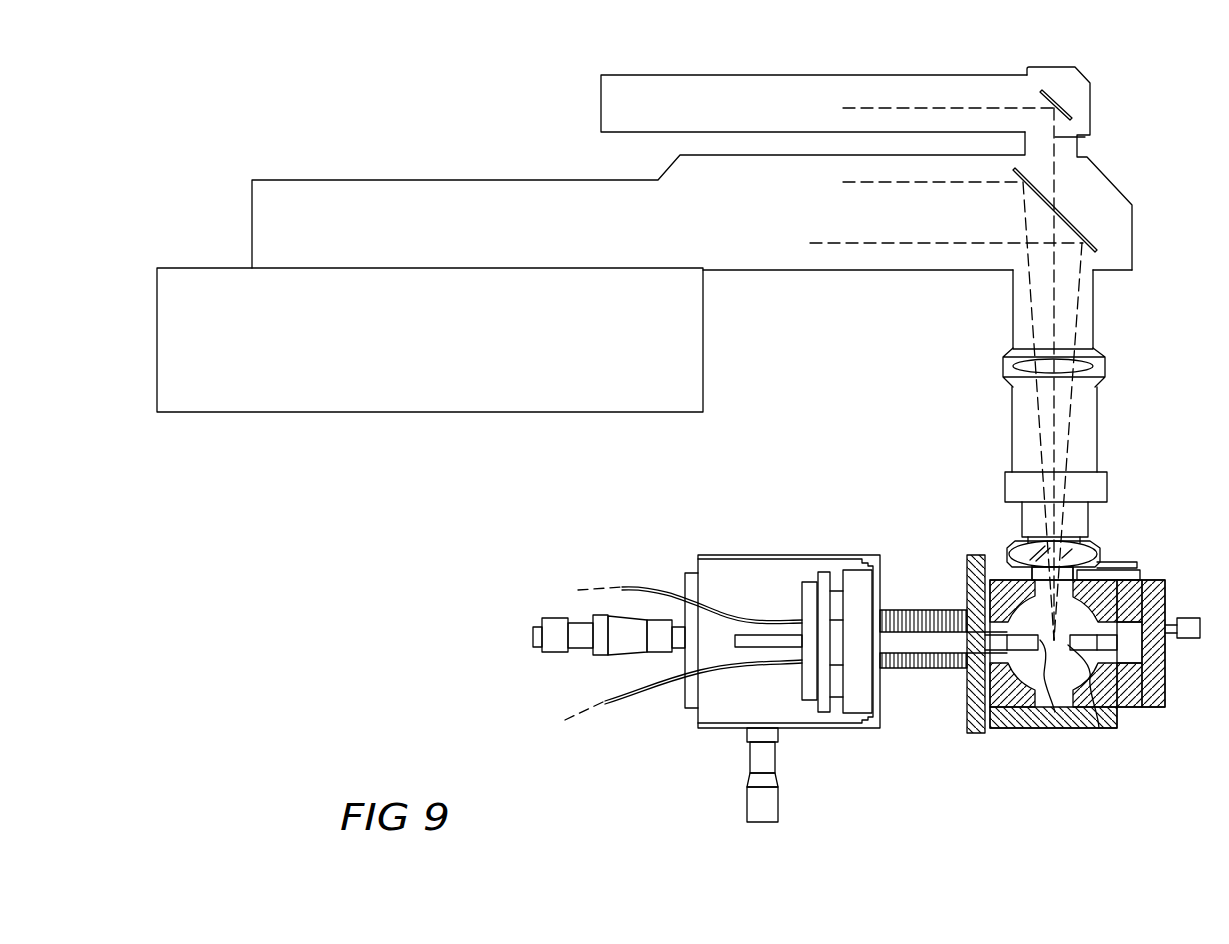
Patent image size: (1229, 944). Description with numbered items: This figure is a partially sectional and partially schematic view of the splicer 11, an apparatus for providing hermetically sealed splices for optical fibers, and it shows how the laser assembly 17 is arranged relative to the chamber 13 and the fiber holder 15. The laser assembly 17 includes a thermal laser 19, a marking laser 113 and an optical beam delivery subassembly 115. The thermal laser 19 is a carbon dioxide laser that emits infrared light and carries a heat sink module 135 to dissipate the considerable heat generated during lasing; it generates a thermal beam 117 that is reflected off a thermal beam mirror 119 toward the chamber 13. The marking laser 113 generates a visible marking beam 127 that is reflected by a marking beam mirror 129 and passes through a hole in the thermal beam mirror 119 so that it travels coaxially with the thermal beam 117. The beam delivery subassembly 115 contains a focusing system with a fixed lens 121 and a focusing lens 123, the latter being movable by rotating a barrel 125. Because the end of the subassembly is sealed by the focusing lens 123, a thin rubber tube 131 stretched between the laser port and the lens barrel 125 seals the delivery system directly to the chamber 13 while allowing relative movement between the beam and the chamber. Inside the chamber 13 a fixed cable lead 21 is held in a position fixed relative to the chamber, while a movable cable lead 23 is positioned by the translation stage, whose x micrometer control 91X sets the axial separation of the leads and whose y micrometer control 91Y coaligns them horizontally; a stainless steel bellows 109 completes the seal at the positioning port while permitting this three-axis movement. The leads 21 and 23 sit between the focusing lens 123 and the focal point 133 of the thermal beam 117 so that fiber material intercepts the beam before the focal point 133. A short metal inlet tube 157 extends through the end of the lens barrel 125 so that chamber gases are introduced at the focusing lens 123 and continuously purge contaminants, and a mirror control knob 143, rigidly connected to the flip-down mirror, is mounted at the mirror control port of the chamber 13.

The splicer 11 is at (373, 664).
The chamber 13 is at (1120, 708).
The fiber holder 15 is at (830, 525).
The laser assembly 17 is at (520, 153).
The thermal laser 19 is at (455, 247).
The fixed cable lead 21 is at (618, 704).
The movable cable lead 23 is at (636, 588).
The x micrometer control 91X is at (553, 629).
The y micrometer control 91Y is at (770, 809).
The stainless steel bellows 109 is at (920, 608).
The marking laser 113 is at (678, 121).
The optical beam delivery subassembly 115 is at (1104, 80).
The thermal beam 117 is at (1080, 298).
The thermal beam mirror 119 is at (1075, 225).
The fixed lens 121 is at (1106, 362).
The focusing lens 123 is at (1090, 548).
The barrel 125 is at (1098, 440).
The visible marking beam 127 is at (1076, 137).
The marking beam mirror 129 is at (1072, 102).
The thin rubber tube 131 is at (1140, 572).
The focal point 133 is at (1055, 712).
The heat sink module 135 is at (441, 365).
The mirror control knob 143 is at (1192, 638).
The inlet tube 157 is at (1131, 563).